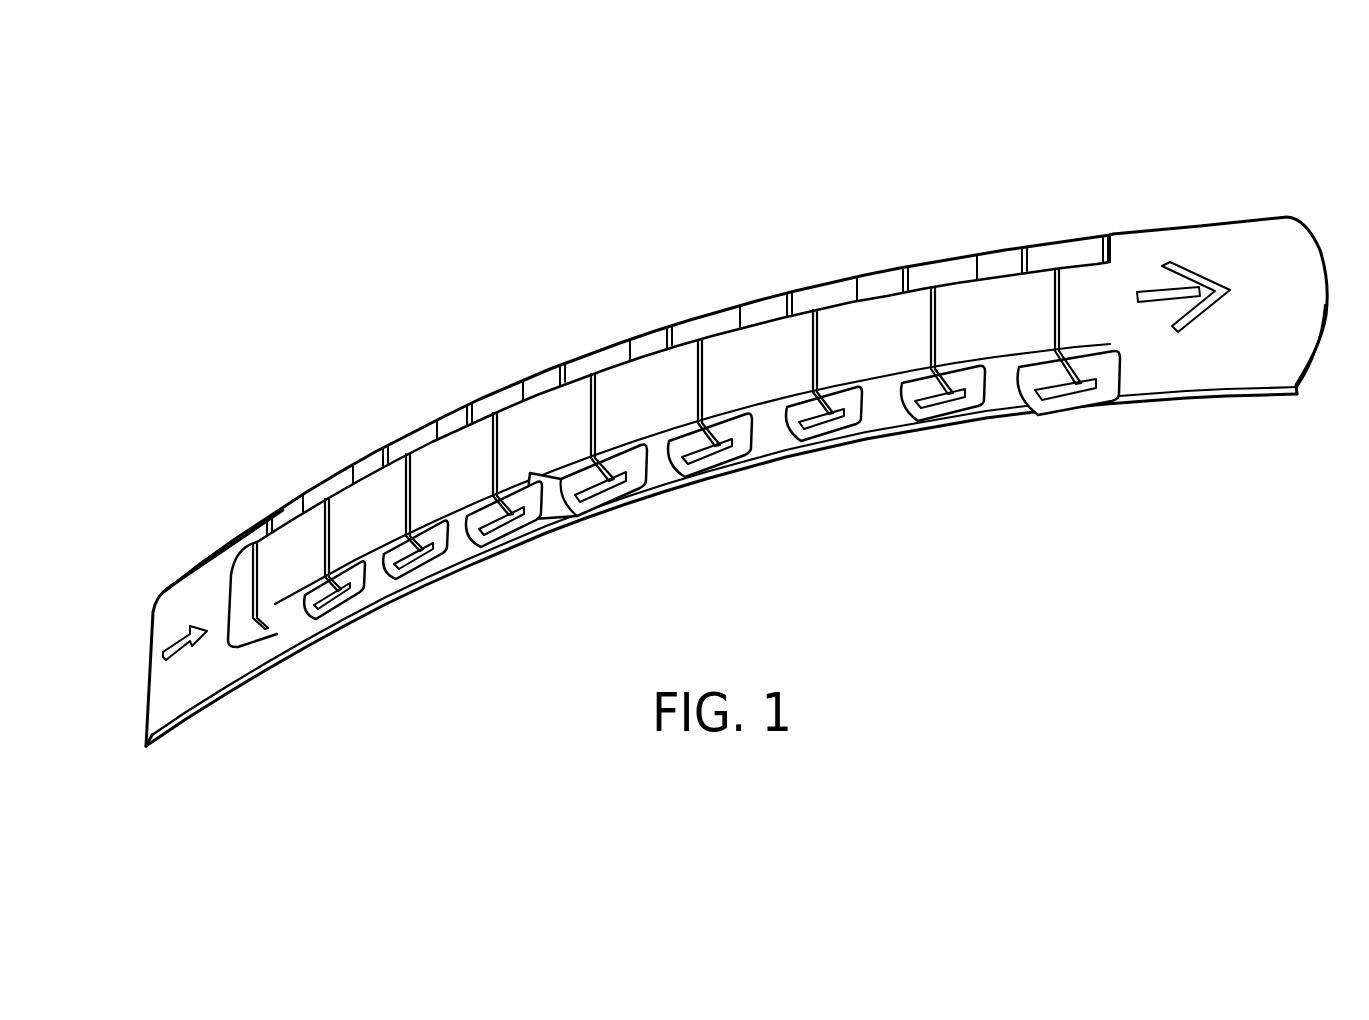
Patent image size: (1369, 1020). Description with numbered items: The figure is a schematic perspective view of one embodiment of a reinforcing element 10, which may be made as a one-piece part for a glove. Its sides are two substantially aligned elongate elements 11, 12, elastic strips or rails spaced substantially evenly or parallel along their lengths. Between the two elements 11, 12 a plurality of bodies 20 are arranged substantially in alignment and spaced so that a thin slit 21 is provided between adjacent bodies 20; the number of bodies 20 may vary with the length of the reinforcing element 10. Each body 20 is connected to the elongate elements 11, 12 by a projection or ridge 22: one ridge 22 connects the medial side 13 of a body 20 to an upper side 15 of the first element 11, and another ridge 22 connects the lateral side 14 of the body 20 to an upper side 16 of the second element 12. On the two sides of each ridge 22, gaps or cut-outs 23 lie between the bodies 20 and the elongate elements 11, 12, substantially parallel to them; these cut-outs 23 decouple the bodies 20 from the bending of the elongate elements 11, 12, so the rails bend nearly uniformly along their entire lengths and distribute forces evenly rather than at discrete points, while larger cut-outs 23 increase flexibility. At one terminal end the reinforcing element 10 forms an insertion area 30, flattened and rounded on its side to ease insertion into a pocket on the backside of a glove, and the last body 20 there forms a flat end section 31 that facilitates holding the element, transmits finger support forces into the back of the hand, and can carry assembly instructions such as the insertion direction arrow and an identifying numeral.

The reinforcing element 10 is at (1176, 142).
The first elongate element 11 is at (590, 357).
The second elongate element 12 is at (588, 497).
The medial side 13 is at (800, 298).
The lateral side 14 is at (813, 423).
The upper side of the first element 15 is at (1050, 257).
The upper side of the second element 16 is at (1057, 390).
The body 20 is at (535, 410).
The slit 21 is at (488, 447).
The ridge 22 is at (560, 378).
The cut-out 23 is at (522, 518).
The insertion area 30 is at (1197, 370).
The flat end section 31 is at (208, 678).